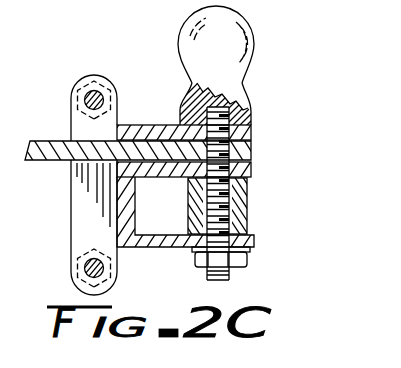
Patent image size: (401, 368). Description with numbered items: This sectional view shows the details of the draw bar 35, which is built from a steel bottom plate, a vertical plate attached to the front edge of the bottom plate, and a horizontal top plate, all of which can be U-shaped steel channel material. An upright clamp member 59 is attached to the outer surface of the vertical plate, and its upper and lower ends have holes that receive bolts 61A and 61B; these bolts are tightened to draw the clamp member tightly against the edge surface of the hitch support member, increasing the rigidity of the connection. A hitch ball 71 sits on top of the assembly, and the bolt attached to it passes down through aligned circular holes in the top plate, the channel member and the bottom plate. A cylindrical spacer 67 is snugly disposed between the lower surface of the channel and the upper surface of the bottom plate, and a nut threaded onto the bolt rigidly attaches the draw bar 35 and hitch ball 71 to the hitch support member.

The draw bar 35 is at (138, 255).
The upright clamp member 59 is at (107, 128).
The bolt 61A is at (84, 100).
The bolt 61B is at (83, 266).
The cylindrical spacer 67 is at (240, 213).
The hitch ball 71 is at (188, 18).